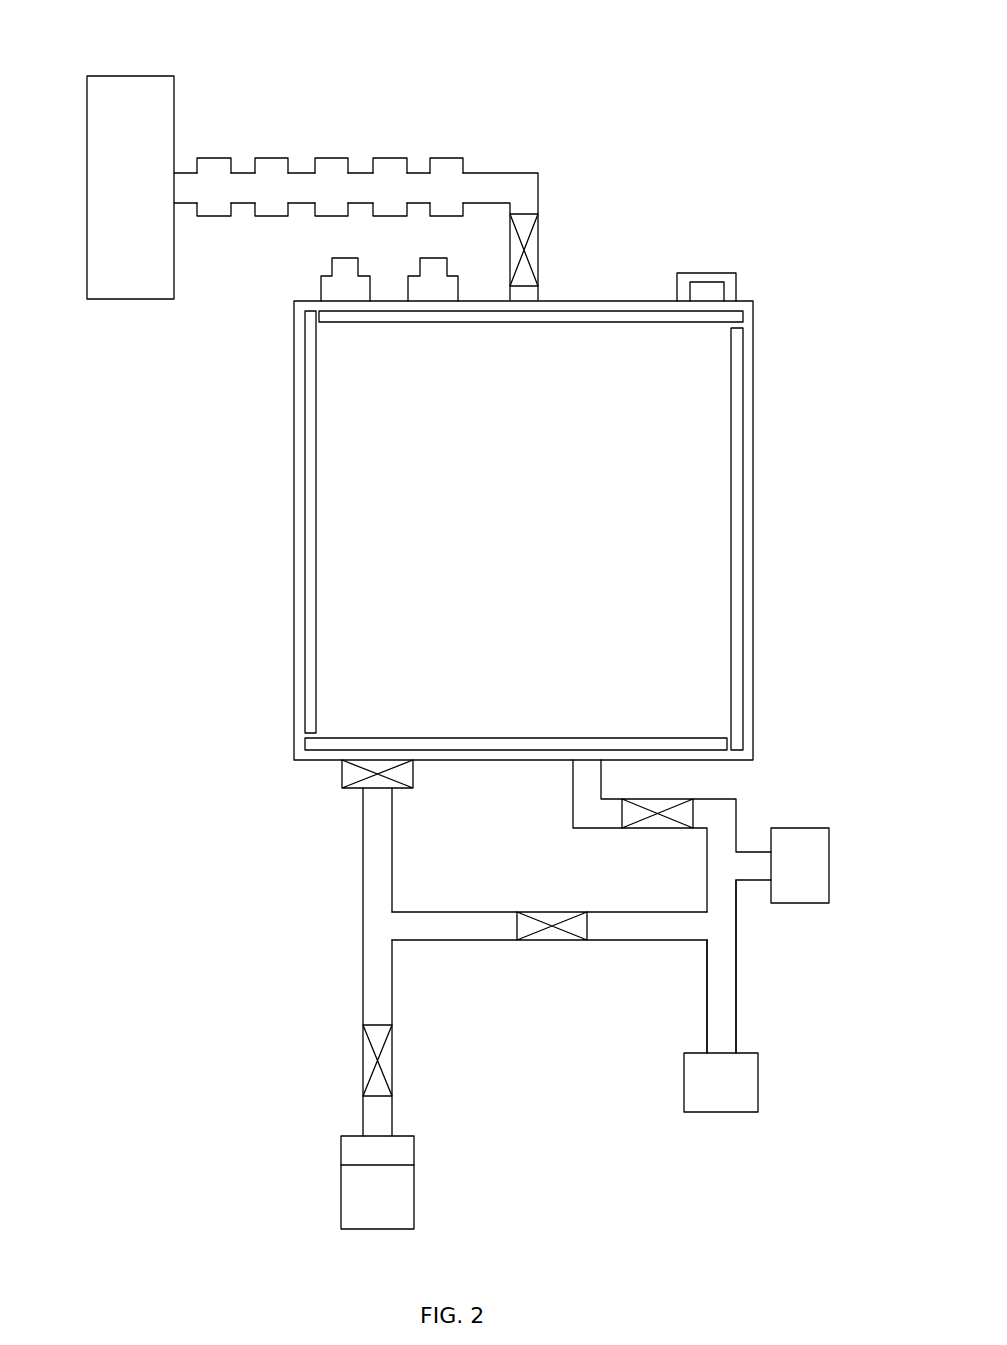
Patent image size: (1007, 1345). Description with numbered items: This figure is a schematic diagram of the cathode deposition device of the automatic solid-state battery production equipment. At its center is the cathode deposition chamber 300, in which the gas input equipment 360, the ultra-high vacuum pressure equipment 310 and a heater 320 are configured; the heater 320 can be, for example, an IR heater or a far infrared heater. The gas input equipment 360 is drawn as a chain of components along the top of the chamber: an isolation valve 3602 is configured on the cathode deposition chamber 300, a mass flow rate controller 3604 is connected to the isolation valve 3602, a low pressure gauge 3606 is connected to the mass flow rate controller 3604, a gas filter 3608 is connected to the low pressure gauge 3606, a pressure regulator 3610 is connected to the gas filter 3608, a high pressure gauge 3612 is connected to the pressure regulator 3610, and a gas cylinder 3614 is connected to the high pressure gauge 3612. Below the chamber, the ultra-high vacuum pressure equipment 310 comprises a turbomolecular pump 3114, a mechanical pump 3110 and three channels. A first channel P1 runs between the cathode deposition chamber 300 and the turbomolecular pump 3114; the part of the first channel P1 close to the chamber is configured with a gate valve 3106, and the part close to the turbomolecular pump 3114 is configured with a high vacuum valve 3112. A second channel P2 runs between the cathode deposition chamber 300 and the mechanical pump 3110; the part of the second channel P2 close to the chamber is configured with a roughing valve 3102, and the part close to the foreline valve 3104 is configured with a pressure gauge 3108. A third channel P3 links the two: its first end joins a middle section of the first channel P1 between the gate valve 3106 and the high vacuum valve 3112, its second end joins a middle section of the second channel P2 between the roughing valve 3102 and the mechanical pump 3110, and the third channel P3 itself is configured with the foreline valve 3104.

The cathode deposition chamber 300 is at (853, 29).
The ultra-high vacuum pressure equipment 310 is at (238, 962).
The heater 320 is at (643, 743).
The gas input equipment 360 is at (565, 78).
The isolation valve 3602 is at (538, 250).
The mass flow rate controller 3604 is at (443, 158).
The low pressure gauge 3606 is at (388, 158).
The gas filter 3608 is at (333, 158).
The pressure regulator 3610 is at (273, 158).
The high pressure gauge 3612 is at (215, 158).
The gas cylinder 3614 is at (132, 76).
The roughing valve 3102 is at (657, 828).
The foreline valve 3104 is at (548, 912).
The gate valve 3106 is at (342, 776).
The pressure gauge 3108 is at (800, 903).
The mechanical pump 3110 is at (720, 1112).
The high vacuum valve 3112 is at (392, 1060).
The turbomolecular pump 3114 is at (341, 1197).
The first channel P1 is at (375, 920).
The second channel P2 is at (722, 1013).
The third channel P3 is at (650, 927).